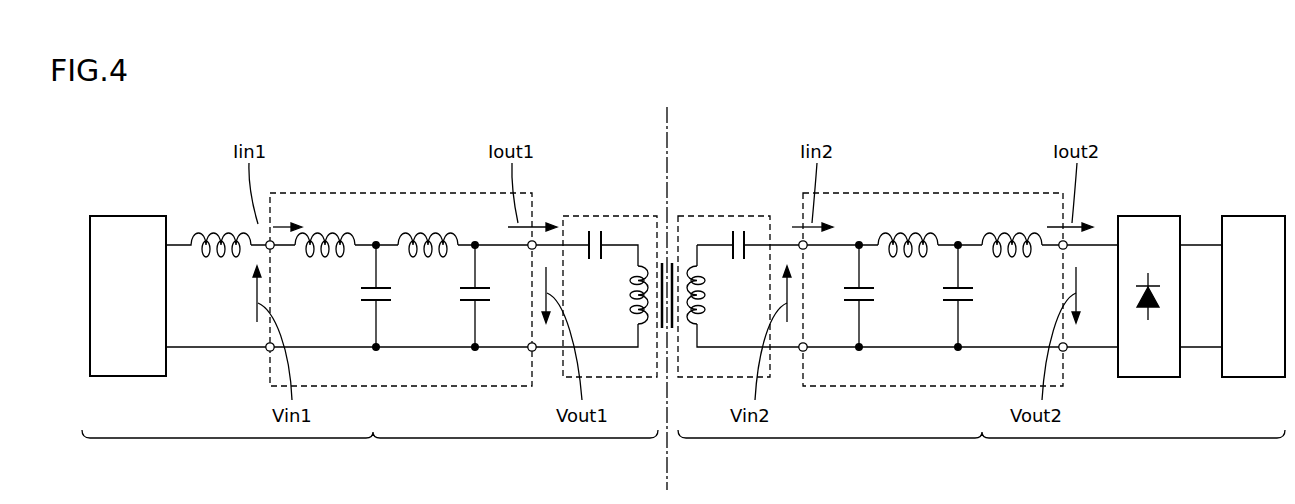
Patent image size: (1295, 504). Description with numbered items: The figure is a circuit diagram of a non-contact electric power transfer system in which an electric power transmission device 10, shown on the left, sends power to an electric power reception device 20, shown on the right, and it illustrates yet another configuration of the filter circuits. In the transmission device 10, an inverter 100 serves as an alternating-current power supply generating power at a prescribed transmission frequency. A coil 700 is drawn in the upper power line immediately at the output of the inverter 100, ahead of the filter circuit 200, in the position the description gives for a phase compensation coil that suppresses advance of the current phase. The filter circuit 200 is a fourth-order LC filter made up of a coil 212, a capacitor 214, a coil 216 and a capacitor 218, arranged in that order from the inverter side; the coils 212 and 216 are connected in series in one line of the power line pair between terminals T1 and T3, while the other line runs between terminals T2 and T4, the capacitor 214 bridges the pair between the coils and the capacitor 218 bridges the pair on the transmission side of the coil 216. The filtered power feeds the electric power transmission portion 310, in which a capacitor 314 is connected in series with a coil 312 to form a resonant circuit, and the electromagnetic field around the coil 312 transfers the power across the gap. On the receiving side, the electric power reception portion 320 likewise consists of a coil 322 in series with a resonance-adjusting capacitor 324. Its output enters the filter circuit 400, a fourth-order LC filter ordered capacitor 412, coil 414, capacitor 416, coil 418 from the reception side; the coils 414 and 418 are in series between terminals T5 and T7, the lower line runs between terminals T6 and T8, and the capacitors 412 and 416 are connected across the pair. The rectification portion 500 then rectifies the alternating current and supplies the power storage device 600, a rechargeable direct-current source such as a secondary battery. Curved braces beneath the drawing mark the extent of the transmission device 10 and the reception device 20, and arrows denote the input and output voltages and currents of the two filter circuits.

The electric power transmission device 10 is at (370, 449).
The electric power reception device 20 is at (981, 449).
The inverter 100 is at (128, 216).
The inductor 700 is at (213, 233).
The filter circuit 200 is at (398, 193).
The coil 212 is at (318, 233).
The capacitor 214 is at (368, 303).
The coil 216 is at (420, 233).
The capacitor 218 is at (467, 303).
The electric power transmission portion 310 is at (630, 216).
The coil 312 is at (632, 294).
The capacitor 314 is at (583, 232).
The electric power reception portion 320 is at (700, 216).
The coil 322 is at (705, 294).
The capacitor 324 is at (750, 232).
The filter circuit 400 is at (940, 193).
The capacitor 412 is at (868, 303).
The coil 414 is at (900, 233).
The capacitor 416 is at (968, 303).
The coil 418 is at (1000, 233).
The rectification portion 500 is at (1148, 216).
The power storage device 600 is at (1252, 216).
The terminal T1 is at (275, 250).
The terminal T2 is at (266, 352).
The terminal T3 is at (528, 250).
The terminal T4 is at (528, 352).
The terminal T5 is at (808, 250).
The terminal T6 is at (808, 352).
The terminal T7 is at (1059, 250).
The terminal T8 is at (1067, 352).